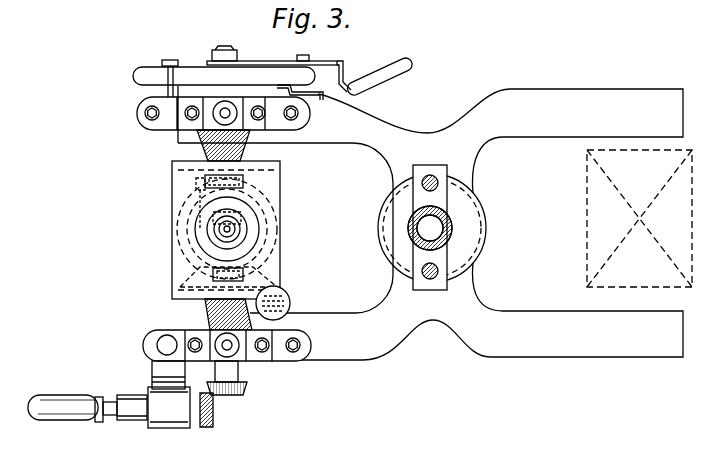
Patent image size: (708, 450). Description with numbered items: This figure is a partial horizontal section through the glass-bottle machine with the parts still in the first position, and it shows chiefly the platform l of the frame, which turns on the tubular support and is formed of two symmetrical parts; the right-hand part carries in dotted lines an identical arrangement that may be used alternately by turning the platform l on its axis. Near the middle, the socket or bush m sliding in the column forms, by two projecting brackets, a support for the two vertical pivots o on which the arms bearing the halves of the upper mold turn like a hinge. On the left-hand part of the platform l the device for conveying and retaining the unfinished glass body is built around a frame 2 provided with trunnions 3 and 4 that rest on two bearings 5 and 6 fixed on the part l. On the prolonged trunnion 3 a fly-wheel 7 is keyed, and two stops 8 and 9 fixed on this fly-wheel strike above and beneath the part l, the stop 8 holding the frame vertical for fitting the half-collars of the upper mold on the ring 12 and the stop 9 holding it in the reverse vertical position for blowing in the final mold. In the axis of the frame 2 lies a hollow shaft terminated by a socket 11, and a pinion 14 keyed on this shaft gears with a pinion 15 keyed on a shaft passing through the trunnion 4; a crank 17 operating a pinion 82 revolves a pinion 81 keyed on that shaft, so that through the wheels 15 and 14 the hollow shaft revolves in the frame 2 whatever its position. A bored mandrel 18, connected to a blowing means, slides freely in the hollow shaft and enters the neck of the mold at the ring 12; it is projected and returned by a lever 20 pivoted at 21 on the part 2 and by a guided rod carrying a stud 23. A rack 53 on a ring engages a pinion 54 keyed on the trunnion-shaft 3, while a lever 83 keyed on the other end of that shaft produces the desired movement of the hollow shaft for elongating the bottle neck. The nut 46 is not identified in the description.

The platform l is at (435, 224).
The vertical pivots o is at (441, 176).
The socket or bush m is at (447, 228).
The frame 2 is at (172, 208).
The trunnion 3 is at (223, 145).
The trunnion 4 is at (207, 306).
The bearing 5 is at (240, 106).
The bearing 6 is at (240, 363).
The fly-wheel 7 is at (133, 77).
The stop 8 is at (322, 101).
The stop 9 is at (170, 60).
The socket 11 is at (252, 250).
The ring 12 is at (236, 217).
The pinion 14 is at (190, 252).
The pinion 15 is at (270, 281).
The crank 17 is at (62, 423).
The mandrel 18 is at (215, 230).
The lever 20 is at (250, 237).
The pivot 21 is at (243, 274).
The stud 23 is at (290, 303).
The nut 46 is at (223, 88).
The rack 53 is at (200, 183).
The pinion 54 is at (243, 180).
The pinion 81 is at (240, 391).
The pinion 82 is at (213, 415).
The lever 83 is at (392, 72).